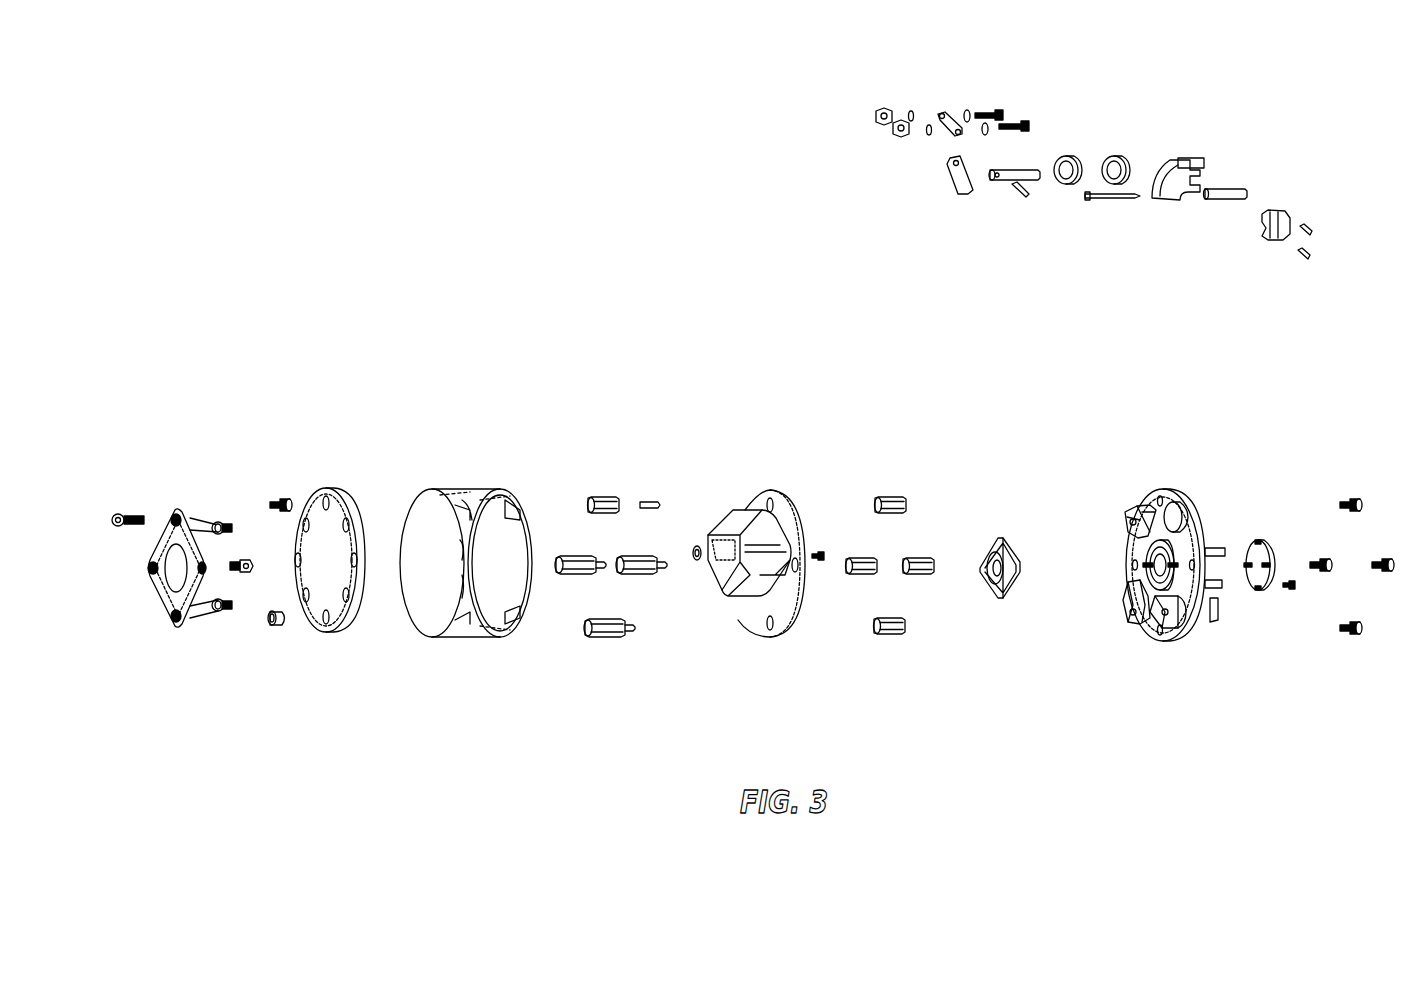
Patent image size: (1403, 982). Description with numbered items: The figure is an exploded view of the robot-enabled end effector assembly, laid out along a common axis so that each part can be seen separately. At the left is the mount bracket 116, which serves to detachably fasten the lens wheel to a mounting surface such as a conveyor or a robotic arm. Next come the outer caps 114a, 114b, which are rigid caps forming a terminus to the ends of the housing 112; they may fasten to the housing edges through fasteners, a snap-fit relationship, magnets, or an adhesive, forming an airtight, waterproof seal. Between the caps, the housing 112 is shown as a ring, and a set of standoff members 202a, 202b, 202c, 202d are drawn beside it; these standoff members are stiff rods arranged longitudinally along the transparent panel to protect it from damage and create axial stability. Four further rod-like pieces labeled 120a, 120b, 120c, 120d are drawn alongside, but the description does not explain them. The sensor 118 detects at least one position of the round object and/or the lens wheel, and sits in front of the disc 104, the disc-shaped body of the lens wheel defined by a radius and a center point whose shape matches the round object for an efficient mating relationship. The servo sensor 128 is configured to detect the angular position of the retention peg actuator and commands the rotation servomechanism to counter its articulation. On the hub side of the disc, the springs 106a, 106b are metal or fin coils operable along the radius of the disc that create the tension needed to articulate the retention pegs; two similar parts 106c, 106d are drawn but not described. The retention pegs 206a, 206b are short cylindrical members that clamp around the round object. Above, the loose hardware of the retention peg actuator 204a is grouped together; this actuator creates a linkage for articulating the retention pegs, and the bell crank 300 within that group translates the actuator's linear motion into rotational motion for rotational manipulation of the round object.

The disc 104 is at (772, 480).
The spring 106a is at (1130, 512).
The spring 106b is at (1148, 495).
The latch 106c is at (1158, 618).
The latch 106d is at (1128, 606).
The housing 112 is at (461, 470).
The outer cap 114a is at (320, 470).
The outer cap 114b is at (1193, 476).
The mount bracket 116 is at (185, 503).
The sensor 118 is at (735, 505).
The standoff 120a is at (610, 497).
The standoff 120b is at (580, 575).
The standoff 120c is at (610, 637).
The standoff 120d is at (650, 575).
The servo sensor 128 is at (1000, 535).
The standoff member 202a is at (866, 555).
The standoff member 202b is at (890, 495).
The standoff member 202c is at (888, 637).
The standoff member 202d is at (915, 555).
The retention peg actuator 204a is at (1315, 100).
The retention peg 206a is at (1215, 545).
The retention peg 206b is at (1215, 588).
The bell crank 300 is at (1166, 198).